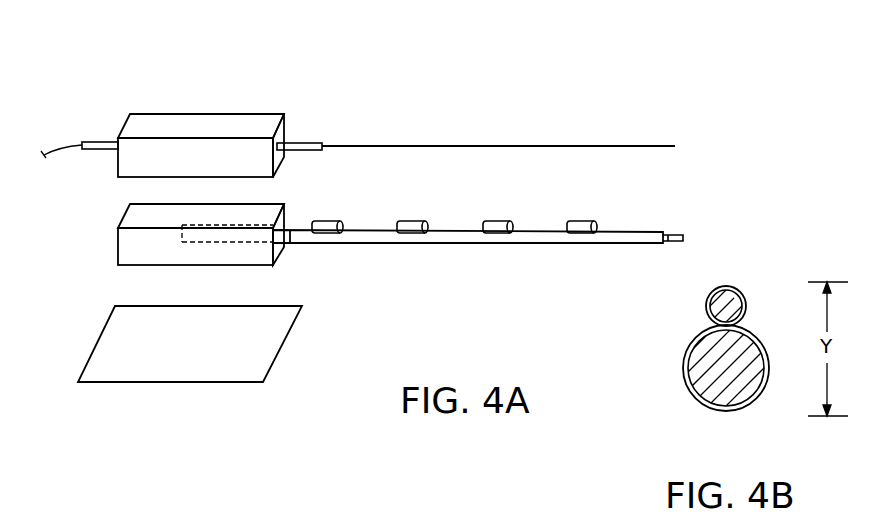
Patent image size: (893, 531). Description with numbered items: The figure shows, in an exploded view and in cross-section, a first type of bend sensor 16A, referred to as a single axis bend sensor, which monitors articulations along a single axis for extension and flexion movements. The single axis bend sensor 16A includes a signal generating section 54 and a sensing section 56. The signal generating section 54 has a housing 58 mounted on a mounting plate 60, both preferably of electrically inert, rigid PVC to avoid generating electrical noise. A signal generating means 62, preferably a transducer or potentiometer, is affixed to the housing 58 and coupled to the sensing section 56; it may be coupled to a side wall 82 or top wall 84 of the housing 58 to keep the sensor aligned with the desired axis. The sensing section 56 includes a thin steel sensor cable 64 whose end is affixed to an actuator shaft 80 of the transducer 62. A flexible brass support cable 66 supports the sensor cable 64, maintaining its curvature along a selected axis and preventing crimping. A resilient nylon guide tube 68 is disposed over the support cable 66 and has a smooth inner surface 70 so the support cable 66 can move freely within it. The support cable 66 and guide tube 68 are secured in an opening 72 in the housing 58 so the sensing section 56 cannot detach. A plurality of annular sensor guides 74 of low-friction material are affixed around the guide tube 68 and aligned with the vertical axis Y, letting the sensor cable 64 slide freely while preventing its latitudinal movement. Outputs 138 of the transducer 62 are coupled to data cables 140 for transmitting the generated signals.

In FIG. 4A, the single axis bend sensor 16A is at (486, 88).
In FIG. 4A, the signal generating section 54 is at (213, 72).
In FIG. 4A, the sensing section 56 is at (503, 266).
In FIG. 4A, the housing 58 is at (282, 246).
In FIG. 4A, the mounting plate 60 is at (213, 367).
In FIG. 4A, the signal generating means 62 is at (247, 123).
In FIG. 4A, the sensor cable 64 is at (507, 148).
In FIG. 4B, the sensor cable 64 is at (730, 308).
In FIG. 4A, the support cable 66 is at (673, 232).
In FIG. 4B, the support cable 66 is at (700, 365).
In FIG. 4A, the guide tube 68 is at (628, 238).
In FIG. 4B, the guide tube 68 is at (695, 398).
In FIG. 4B, the inner surface 70 is at (742, 407).
In FIG. 4A, the opening 72 is at (183, 245).
In FIG. 4A, the annular sensor guides 74 is at (413, 222).
In FIG. 4B, the annular sensor guides 74 is at (730, 287).
In FIG. 4A, the actuator shaft 80 is at (305, 140).
In FIG. 4A, the side wall 82 is at (127, 252).
In FIG. 4A, the top wall 84 is at (133, 215).
In FIG. 4A, the outputs 138 is at (98, 152).
In FIG. 4A, the data cables 140 is at (63, 143).